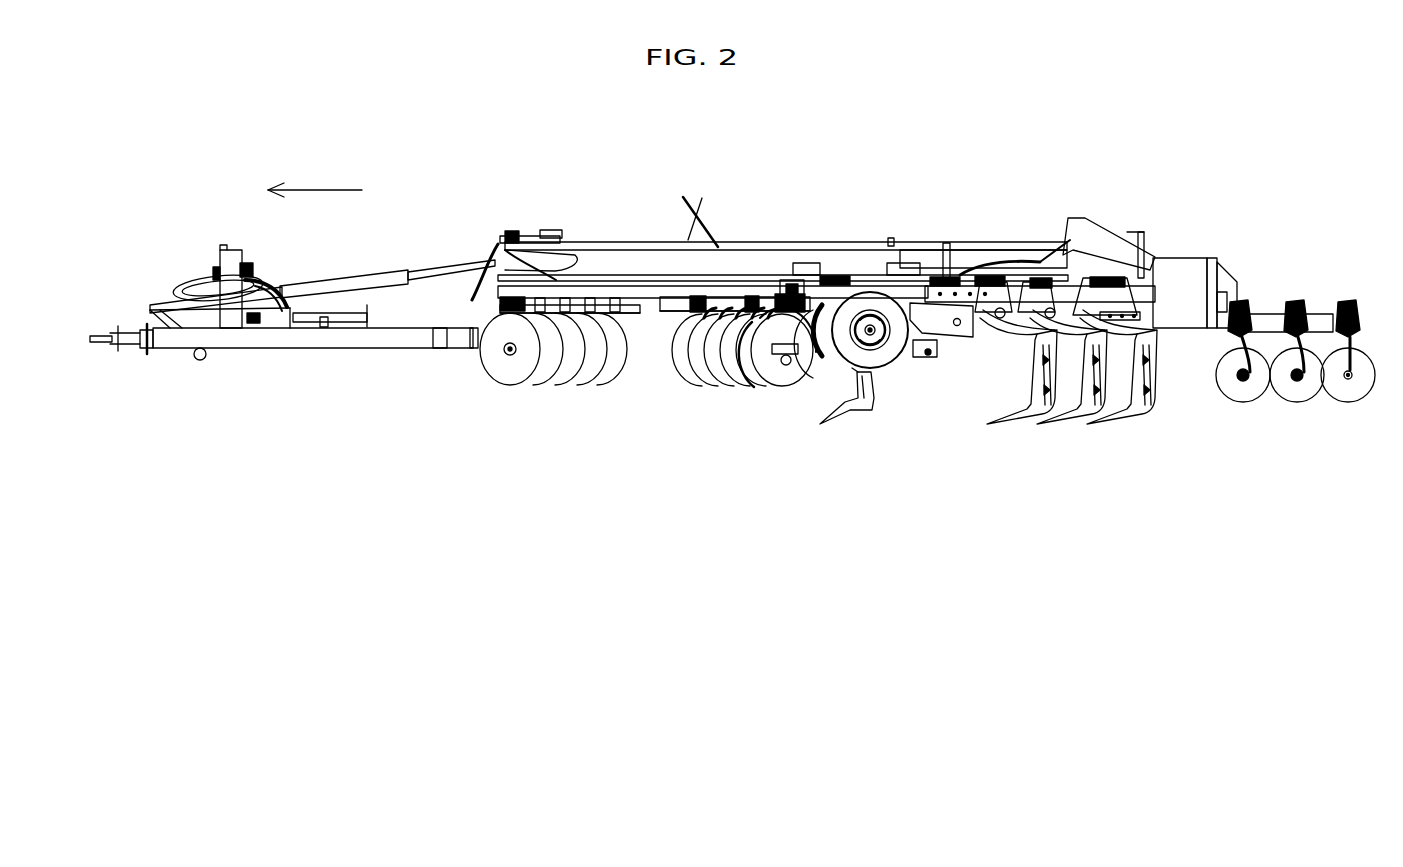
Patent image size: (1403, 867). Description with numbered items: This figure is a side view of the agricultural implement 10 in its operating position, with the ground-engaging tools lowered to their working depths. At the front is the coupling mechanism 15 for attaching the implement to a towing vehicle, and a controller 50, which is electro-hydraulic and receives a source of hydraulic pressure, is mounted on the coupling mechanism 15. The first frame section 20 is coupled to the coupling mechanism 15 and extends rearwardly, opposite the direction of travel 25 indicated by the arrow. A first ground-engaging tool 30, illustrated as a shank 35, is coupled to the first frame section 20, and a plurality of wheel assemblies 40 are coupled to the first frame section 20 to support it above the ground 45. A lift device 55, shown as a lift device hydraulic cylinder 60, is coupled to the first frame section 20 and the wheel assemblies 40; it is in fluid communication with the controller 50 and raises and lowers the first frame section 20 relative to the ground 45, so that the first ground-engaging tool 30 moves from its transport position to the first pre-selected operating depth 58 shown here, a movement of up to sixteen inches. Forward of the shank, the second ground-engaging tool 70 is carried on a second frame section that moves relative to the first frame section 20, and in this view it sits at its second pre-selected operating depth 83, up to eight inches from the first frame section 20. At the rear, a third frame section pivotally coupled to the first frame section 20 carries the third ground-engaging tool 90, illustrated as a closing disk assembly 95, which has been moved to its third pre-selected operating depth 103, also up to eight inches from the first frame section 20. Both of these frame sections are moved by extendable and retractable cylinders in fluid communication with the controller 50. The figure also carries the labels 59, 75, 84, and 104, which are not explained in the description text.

The agricultural implement 10 is at (1010, 112).
The coupling mechanism 15 is at (297, 340).
The first frame section 20 is at (632, 262).
The direction of travel 25 is at (320, 190).
The first ground-engaging tool 30 is at (836, 283).
The shank 35 is at (860, 422).
The wheel assemblies 40 is at (815, 372).
The ground 45 is at (504, 488).
The controller 50 is at (246, 262).
The lift device 55 is at (922, 358).
The first pre-selected operating depth 58 is at (1131, 455).
The intermediate section 59 is at (915, 490).
The lift device hydraulic cylinder 60 is at (890, 362).
The second ground-engaging tool 70 is at (500, 238).
The disc blades 75 is at (510, 372).
The second pre-selected operating depth 83 is at (580, 470).
The second gang 84 is at (630, 480).
The third ground-engaging tool 90 is at (1346, 300).
The closing disk assembly 95 is at (1340, 402).
The third pre-selected operating depth 103 is at (1236, 466).
The second closing wheel arm 104 is at (1331, 497).